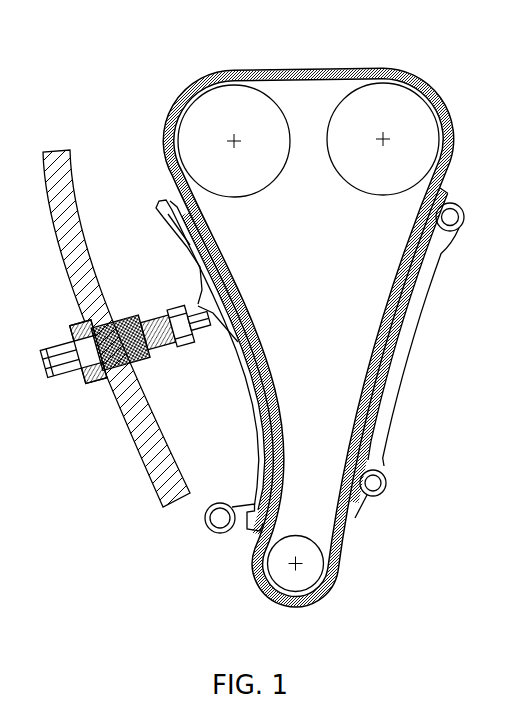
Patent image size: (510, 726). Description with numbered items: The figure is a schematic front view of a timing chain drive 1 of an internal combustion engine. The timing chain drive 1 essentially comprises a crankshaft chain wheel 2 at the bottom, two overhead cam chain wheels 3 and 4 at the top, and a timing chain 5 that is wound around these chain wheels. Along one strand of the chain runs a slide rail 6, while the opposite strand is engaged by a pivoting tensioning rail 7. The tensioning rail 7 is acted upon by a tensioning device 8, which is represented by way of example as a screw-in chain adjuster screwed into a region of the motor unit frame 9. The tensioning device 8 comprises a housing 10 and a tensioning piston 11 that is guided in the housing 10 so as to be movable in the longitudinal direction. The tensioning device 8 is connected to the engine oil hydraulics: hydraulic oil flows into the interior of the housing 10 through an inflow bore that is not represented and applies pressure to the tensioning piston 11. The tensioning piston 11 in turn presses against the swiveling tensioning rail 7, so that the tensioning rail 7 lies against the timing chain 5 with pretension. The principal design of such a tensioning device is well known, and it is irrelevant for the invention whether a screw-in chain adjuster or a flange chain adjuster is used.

The timing chain drive 1 is at (447, 49).
The crankshaft chain wheel 2 is at (303, 580).
The overhead cam chain wheel 3 is at (213, 97).
The overhead cam chain wheel 4 is at (440, 95).
The timing chain 5 is at (317, 66).
The slide rail 6 is at (398, 384).
The tensioning rail 7 is at (255, 449).
The tensioning device 8 is at (126, 323).
The motor unit frame 9 is at (62, 235).
The housing 10 is at (175, 348).
The tensioning piston 11 is at (201, 331).